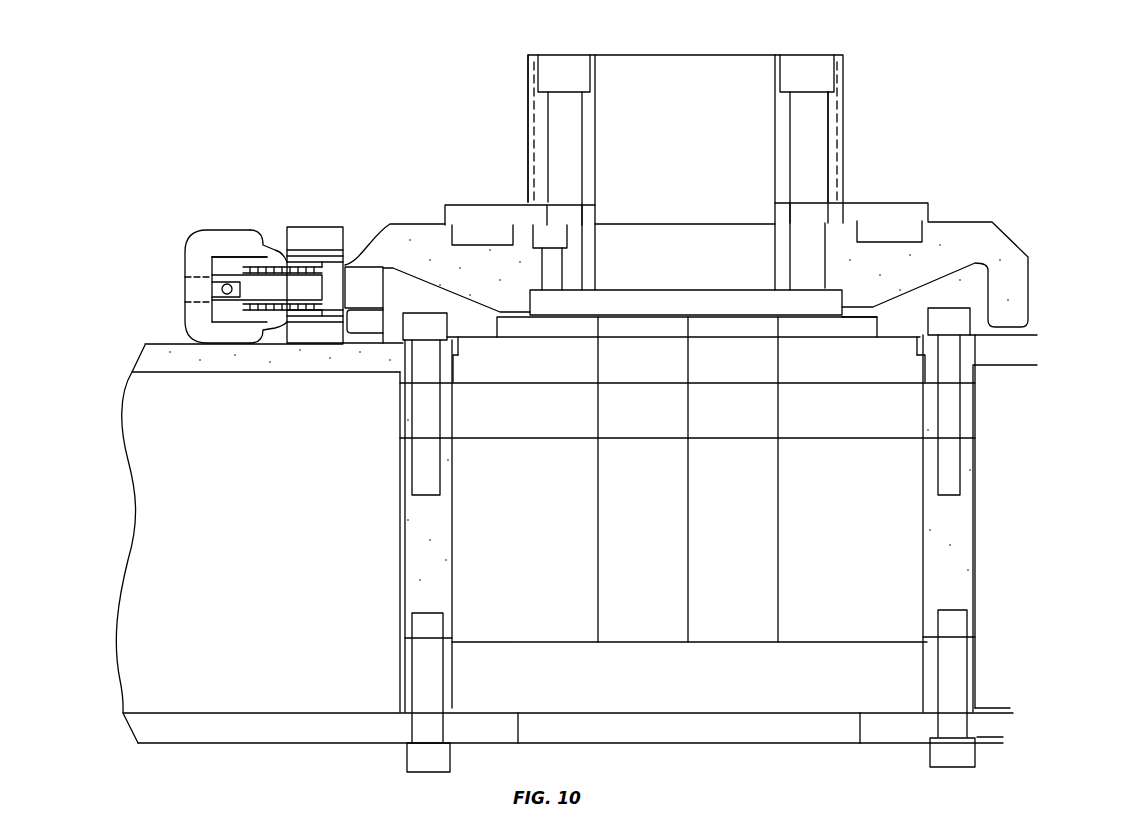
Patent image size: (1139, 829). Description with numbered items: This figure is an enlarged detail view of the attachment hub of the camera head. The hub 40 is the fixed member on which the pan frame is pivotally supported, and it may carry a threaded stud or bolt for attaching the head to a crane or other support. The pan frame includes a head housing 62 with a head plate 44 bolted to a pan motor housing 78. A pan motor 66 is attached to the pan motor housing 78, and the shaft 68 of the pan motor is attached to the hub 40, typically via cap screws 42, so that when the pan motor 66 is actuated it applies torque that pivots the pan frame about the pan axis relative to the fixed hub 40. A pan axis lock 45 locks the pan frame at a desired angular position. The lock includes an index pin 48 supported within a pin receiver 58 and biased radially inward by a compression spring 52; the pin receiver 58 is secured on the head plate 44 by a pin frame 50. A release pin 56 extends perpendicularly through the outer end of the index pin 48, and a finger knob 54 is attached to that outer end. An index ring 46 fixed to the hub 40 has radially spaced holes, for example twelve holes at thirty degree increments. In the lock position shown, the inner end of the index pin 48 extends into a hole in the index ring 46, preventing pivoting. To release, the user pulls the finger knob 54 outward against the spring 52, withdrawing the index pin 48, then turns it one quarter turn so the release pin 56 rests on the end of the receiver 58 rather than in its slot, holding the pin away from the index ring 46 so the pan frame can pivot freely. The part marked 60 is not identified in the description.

The hub 40 is at (843, 95).
The cap screws 42 is at (810, 133).
The head plate 44 is at (176, 357).
The pan axis lock 45 is at (228, 211).
The index ring 46 is at (992, 240).
The index pin 48 is at (360, 278).
The pin frame 50 is at (307, 240).
The compression spring 52 is at (264, 246).
The finger knob 54 is at (198, 250).
The release pin 56 is at (222, 290).
The pin receiver 58 is at (230, 262).
The shaft 60 is at (683, 122).
The head housing 62 is at (160, 597).
The pan motor 66 is at (490, 527).
The shaft 68 is at (642, 347).
The pan motor housing 78 is at (430, 595).